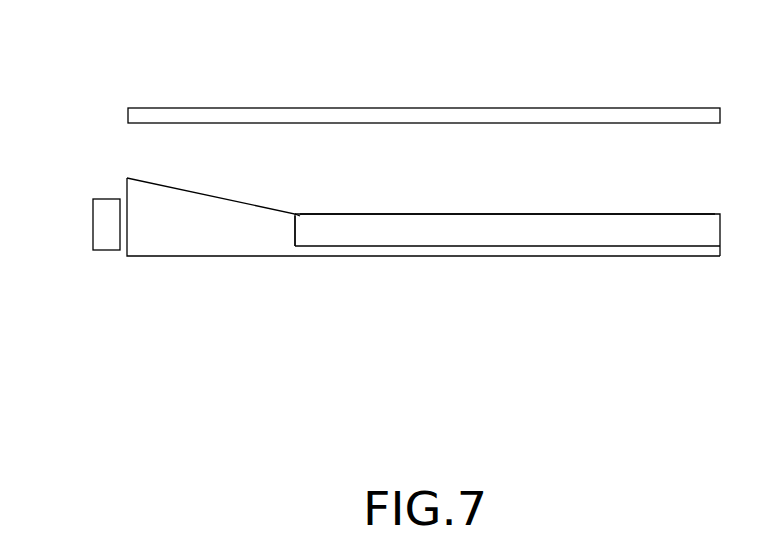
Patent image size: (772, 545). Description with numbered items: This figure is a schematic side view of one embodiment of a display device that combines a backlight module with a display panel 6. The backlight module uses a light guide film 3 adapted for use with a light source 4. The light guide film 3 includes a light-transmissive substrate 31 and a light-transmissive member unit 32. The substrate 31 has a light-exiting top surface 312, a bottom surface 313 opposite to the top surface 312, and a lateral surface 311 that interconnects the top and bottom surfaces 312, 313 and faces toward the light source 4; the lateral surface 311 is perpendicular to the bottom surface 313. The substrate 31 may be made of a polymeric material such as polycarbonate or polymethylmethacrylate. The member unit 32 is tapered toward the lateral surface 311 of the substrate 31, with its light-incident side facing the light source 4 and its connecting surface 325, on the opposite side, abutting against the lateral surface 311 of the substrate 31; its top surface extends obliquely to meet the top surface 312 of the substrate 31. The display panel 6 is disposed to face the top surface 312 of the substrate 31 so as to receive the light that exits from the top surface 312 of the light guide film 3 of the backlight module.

The light guide film 3 is at (381, 220).
The light source 4 is at (100, 222).
The display panel 6 is at (482, 107).
The light-transmissive substrate 31 is at (488, 240).
The light-transmissive member unit 32 is at (105, 163).
The lateral surface 311 is at (295, 240).
The light-exiting top surface 312 is at (558, 214).
The bottom surface 313 is at (612, 256).
The connecting surface 325 is at (297, 222).